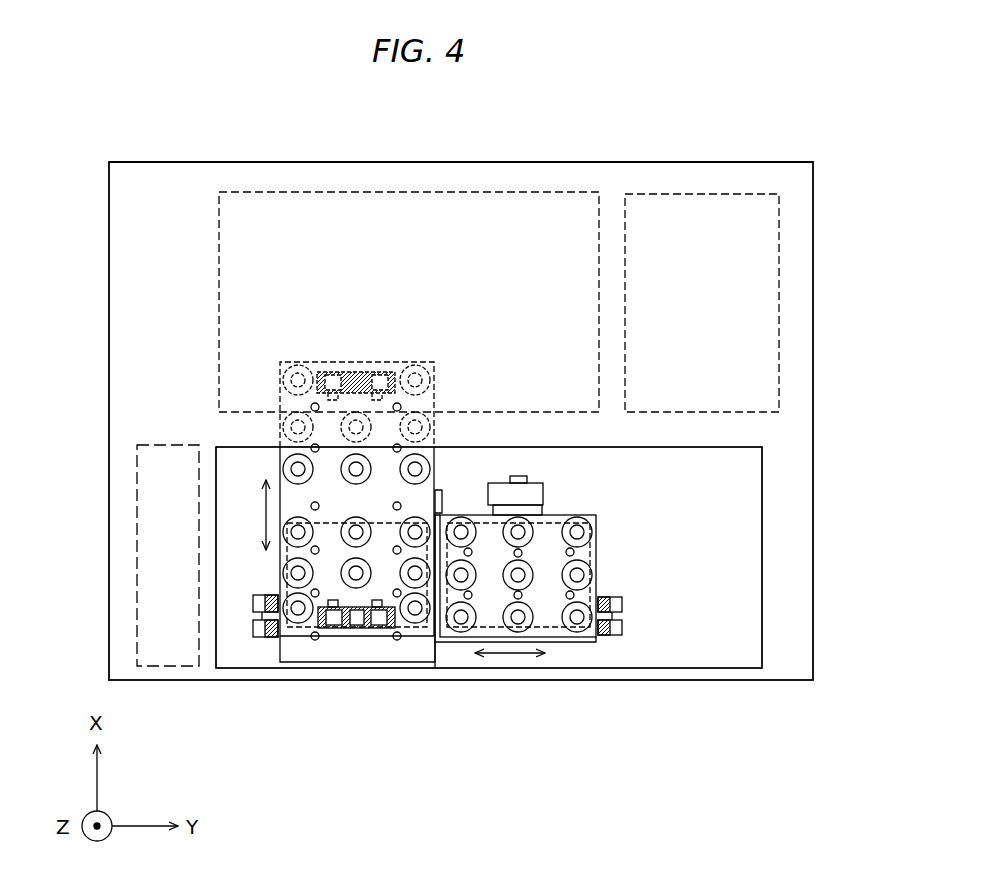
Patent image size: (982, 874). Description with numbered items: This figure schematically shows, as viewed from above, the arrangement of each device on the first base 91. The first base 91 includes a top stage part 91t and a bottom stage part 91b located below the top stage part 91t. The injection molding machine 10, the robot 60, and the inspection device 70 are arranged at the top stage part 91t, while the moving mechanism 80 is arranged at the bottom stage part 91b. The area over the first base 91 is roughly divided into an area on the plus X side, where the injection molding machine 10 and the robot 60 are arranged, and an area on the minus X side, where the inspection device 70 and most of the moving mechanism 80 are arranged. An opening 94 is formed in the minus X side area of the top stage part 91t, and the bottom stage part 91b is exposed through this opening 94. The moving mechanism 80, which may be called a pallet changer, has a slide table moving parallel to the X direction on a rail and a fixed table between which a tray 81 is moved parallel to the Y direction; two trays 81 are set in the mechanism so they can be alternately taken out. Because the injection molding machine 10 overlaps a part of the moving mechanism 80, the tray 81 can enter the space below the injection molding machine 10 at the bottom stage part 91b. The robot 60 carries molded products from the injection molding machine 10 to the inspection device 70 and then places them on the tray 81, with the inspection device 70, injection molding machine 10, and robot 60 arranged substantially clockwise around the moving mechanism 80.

The first base 91 is at (147, 145).
The top stage part 91t is at (413, 176).
The bottom stage part 91b is at (675, 592).
The injection molding machine 10 is at (515, 192).
The robot 60 is at (717, 194).
The inspection device 70 is at (135, 519).
The moving mechanism 80 is at (443, 644).
The tray 81 is at (297, 628).
The opening 94 is at (242, 668).